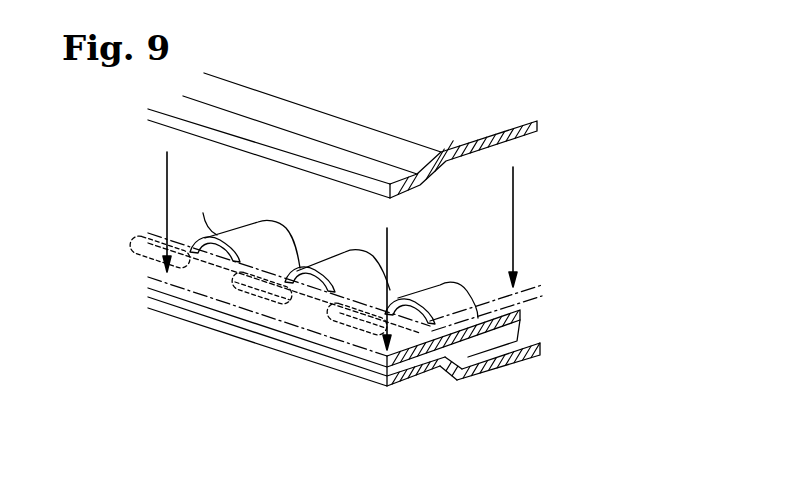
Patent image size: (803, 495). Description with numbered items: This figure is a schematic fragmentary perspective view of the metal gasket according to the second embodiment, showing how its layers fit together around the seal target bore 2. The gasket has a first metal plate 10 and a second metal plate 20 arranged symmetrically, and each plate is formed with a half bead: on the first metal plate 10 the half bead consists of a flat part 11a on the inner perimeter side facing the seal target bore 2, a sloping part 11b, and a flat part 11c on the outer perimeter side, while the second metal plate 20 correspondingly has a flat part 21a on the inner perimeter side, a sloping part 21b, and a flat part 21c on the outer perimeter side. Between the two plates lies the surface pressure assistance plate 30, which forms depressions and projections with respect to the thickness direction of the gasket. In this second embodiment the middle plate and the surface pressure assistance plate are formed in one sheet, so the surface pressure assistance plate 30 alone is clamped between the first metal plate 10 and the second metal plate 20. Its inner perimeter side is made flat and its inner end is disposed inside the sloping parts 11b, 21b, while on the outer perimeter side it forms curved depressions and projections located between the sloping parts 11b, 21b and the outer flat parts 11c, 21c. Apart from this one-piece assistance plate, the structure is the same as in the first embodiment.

The first metal plate 10 is at (425, 123).
The flat part on the inner perimeter side 11a is at (263, 143).
The sloping part 11b is at (337, 137).
The flat part on the outer perimeter side 11c is at (400, 115).
The seal target bore 2 is at (248, 392).
The second metal plate 20 is at (521, 327).
The flat part on the inner perimeter side 21a is at (400, 392).
The sloping part 21b is at (443, 383).
The flat part on the outer perimeter side 21c is at (489, 374).
The surface pressure assistance plate 30 is at (147, 288).